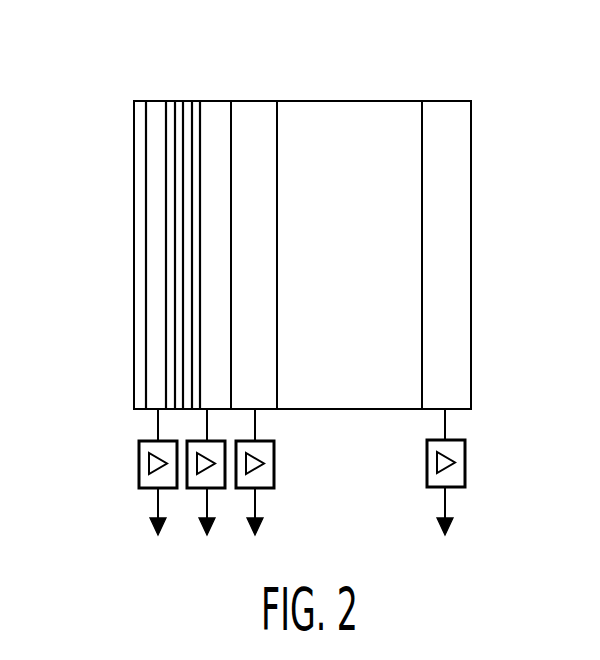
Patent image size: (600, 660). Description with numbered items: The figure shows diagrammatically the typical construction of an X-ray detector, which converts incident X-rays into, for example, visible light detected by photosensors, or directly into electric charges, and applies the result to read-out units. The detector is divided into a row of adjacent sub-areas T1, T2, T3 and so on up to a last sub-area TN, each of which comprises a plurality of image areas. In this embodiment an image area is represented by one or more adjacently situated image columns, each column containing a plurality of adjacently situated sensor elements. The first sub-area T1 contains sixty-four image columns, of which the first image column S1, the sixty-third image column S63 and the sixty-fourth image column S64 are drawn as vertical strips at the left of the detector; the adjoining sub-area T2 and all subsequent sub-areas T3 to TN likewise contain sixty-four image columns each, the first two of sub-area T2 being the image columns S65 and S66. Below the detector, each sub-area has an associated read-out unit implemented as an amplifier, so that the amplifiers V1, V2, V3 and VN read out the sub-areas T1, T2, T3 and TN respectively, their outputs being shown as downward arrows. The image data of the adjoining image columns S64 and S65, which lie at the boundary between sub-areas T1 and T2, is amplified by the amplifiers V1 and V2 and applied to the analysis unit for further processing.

The sub-area T1 is at (156, 101).
The sub-area T2 is at (217, 101).
The sub-area T3 is at (257, 101).
The sub-area TN is at (446, 101).
The image column S1 is at (141, 346).
The image column S63 is at (170, 300).
The image column S64 is at (179, 252).
The image column S65 is at (185, 205).
The image column S66 is at (193, 158).
The amplifier V1 is at (145, 488).
The amplifier V2 is at (194, 488).
The amplifier V3 is at (243, 488).
The amplifier VN is at (434, 487).